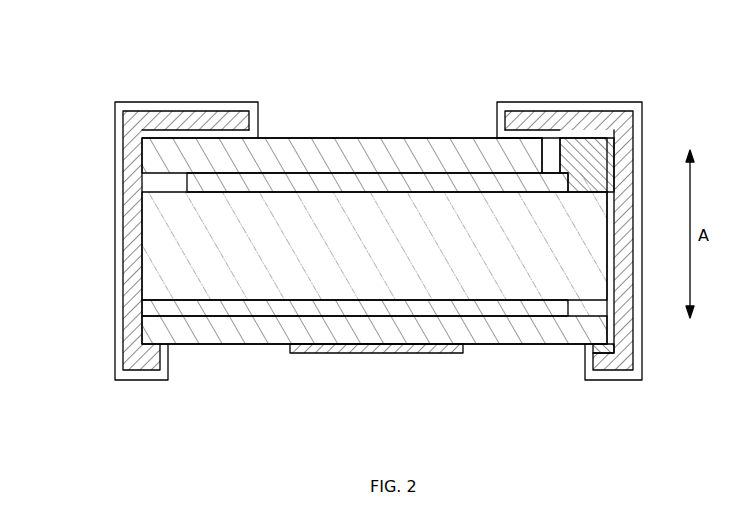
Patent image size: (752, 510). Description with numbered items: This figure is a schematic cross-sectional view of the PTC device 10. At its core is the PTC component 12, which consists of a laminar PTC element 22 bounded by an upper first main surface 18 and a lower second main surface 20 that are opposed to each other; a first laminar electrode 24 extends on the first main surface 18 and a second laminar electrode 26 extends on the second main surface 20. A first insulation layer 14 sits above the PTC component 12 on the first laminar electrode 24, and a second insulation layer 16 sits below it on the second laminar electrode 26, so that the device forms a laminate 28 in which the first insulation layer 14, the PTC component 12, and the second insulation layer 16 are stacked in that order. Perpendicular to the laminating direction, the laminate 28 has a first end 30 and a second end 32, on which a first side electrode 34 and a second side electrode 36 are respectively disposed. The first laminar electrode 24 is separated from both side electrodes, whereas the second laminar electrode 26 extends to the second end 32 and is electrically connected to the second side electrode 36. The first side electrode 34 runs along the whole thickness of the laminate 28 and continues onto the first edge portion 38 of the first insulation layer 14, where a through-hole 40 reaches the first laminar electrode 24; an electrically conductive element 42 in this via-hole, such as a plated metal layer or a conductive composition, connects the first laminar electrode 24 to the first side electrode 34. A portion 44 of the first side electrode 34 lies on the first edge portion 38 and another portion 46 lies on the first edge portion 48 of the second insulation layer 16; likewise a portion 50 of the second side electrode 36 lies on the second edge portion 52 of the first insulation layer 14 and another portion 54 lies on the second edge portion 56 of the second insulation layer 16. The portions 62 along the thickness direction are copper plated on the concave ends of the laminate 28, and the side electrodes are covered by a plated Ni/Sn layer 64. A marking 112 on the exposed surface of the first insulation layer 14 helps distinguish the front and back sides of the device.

The PTC device 10 is at (373, 108).
The PTC component 12 is at (71, 207).
The first insulation layer 14 is at (150, 168).
The second insulation layer 16 is at (145, 325).
The first main surface 18 is at (303, 190).
The second main surface 20 is at (332, 298).
The laminar PTC element 22 is at (160, 247).
The first laminar electrode 24 is at (207, 181).
The second laminar electrode 26 is at (153, 307).
The laminate 28 is at (36, 158).
The first end 30 is at (618, 220).
The second end 32 is at (143, 280).
The first side electrode 34 is at (622, 270).
The second side electrode 36 is at (135, 157).
The first edge portion of the first insulation layer 38 is at (597, 153).
The through-hole 40 is at (545, 160).
The electrically conductive element 42 is at (610, 143).
The portion of the first side electrode 44 is at (640, 94).
The other portion of the first side electrode 46 is at (640, 388).
The first edge portion of the second insulation layer 48 is at (607, 330).
The portion of the second side electrode 50 is at (256, 94).
The second edge portion of the first insulation layer 52 is at (205, 150).
The other portion of the second side electrode 54 is at (168, 388).
The second edge portion of the second insulation layer 56 is at (165, 330).
The portion along the thickness direction 62 is at (133, 187).
The Ni/Sn layer 64 is at (262, 108).
The marking 112 is at (376, 360).